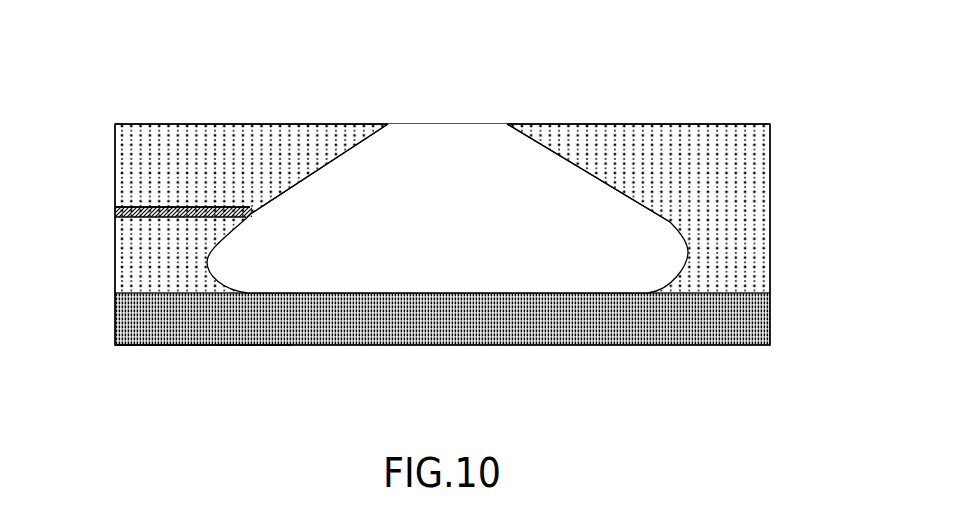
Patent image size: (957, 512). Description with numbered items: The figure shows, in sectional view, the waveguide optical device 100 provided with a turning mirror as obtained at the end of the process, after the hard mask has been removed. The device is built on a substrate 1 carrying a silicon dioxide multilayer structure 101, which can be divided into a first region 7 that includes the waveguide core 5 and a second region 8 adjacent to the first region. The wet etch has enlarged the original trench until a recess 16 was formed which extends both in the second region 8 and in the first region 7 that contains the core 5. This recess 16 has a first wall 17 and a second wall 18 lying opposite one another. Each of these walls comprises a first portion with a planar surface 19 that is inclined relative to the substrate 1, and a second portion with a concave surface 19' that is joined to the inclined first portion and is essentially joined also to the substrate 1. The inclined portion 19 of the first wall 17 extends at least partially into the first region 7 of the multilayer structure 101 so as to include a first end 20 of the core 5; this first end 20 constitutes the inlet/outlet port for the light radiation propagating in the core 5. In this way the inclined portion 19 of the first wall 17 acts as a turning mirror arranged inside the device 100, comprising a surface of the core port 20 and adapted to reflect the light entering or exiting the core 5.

The substrate 1 is at (128, 318).
The core 5 is at (115, 213).
The first region 7 is at (120, 360).
The second region 8 is at (283, 115).
The recess 16 is at (462, 233).
The first wall 17 is at (287, 206).
The second wall 18 is at (608, 203).
The planar surface 19 is at (450, 126).
The concave surface second portion 19' is at (447, 324).
The first end 20 is at (236, 207).
The optical device 100 is at (223, 462).
The multilayer structure 101 is at (778, 283).